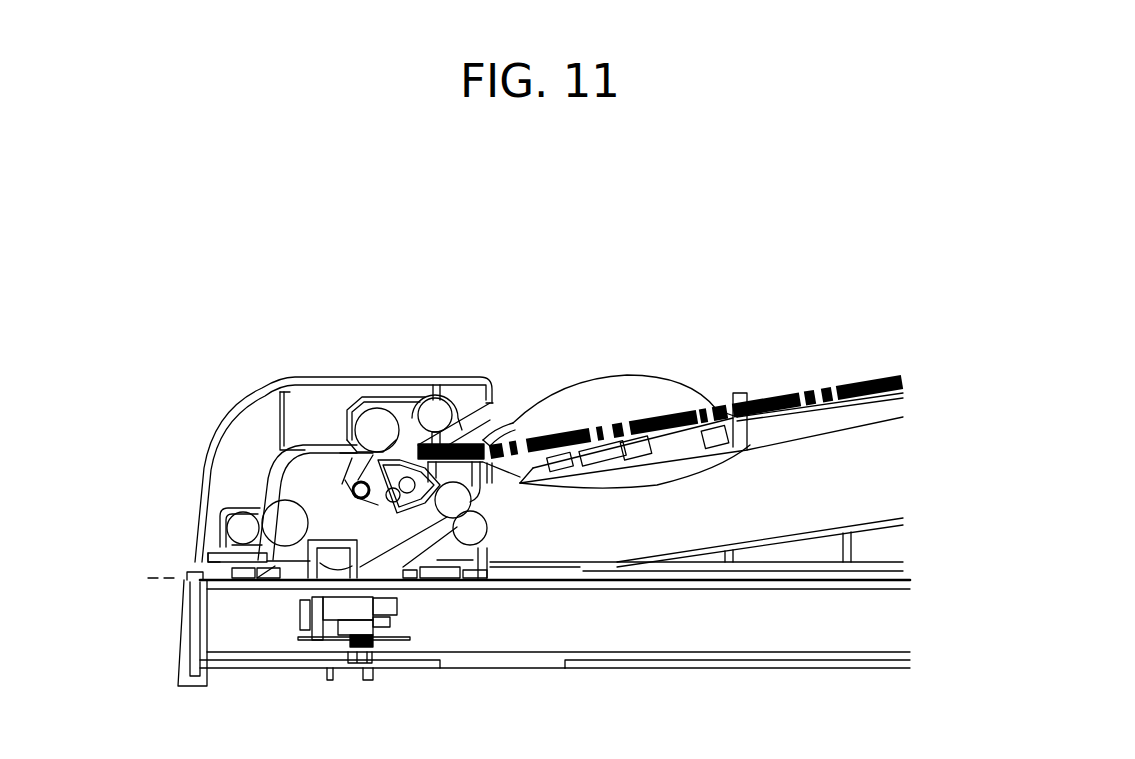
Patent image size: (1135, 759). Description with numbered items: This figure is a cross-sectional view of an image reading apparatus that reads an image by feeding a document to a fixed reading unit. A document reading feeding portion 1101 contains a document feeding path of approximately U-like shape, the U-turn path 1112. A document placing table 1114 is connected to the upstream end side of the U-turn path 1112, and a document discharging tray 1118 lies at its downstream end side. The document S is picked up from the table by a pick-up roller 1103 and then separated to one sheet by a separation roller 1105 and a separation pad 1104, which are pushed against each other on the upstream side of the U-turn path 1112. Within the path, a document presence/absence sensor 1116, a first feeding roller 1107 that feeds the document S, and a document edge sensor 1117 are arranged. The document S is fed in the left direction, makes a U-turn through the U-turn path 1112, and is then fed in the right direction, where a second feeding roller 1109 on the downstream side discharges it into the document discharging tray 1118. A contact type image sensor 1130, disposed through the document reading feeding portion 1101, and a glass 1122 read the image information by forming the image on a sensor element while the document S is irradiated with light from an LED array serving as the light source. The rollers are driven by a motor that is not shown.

The document reading feeding portion 1101 is at (242, 413).
The pick-up roller 1103 is at (460, 377).
The separation pad 1104 is at (438, 403).
The separation roller 1105 is at (372, 405).
The first feeding roller 1107 is at (286, 510).
The second feeding roller 1109 is at (453, 500).
The U-turn path 1112 is at (258, 490).
The document placing table 1114 is at (772, 412).
The document presence/absence sensor 1116 is at (520, 423).
The document edge sensor 1117 is at (217, 538).
The document discharging tray 1118 is at (560, 558).
The glass 1122 is at (492, 590).
The contact type image sensor 1130 is at (333, 607).
The document S is at (860, 372).